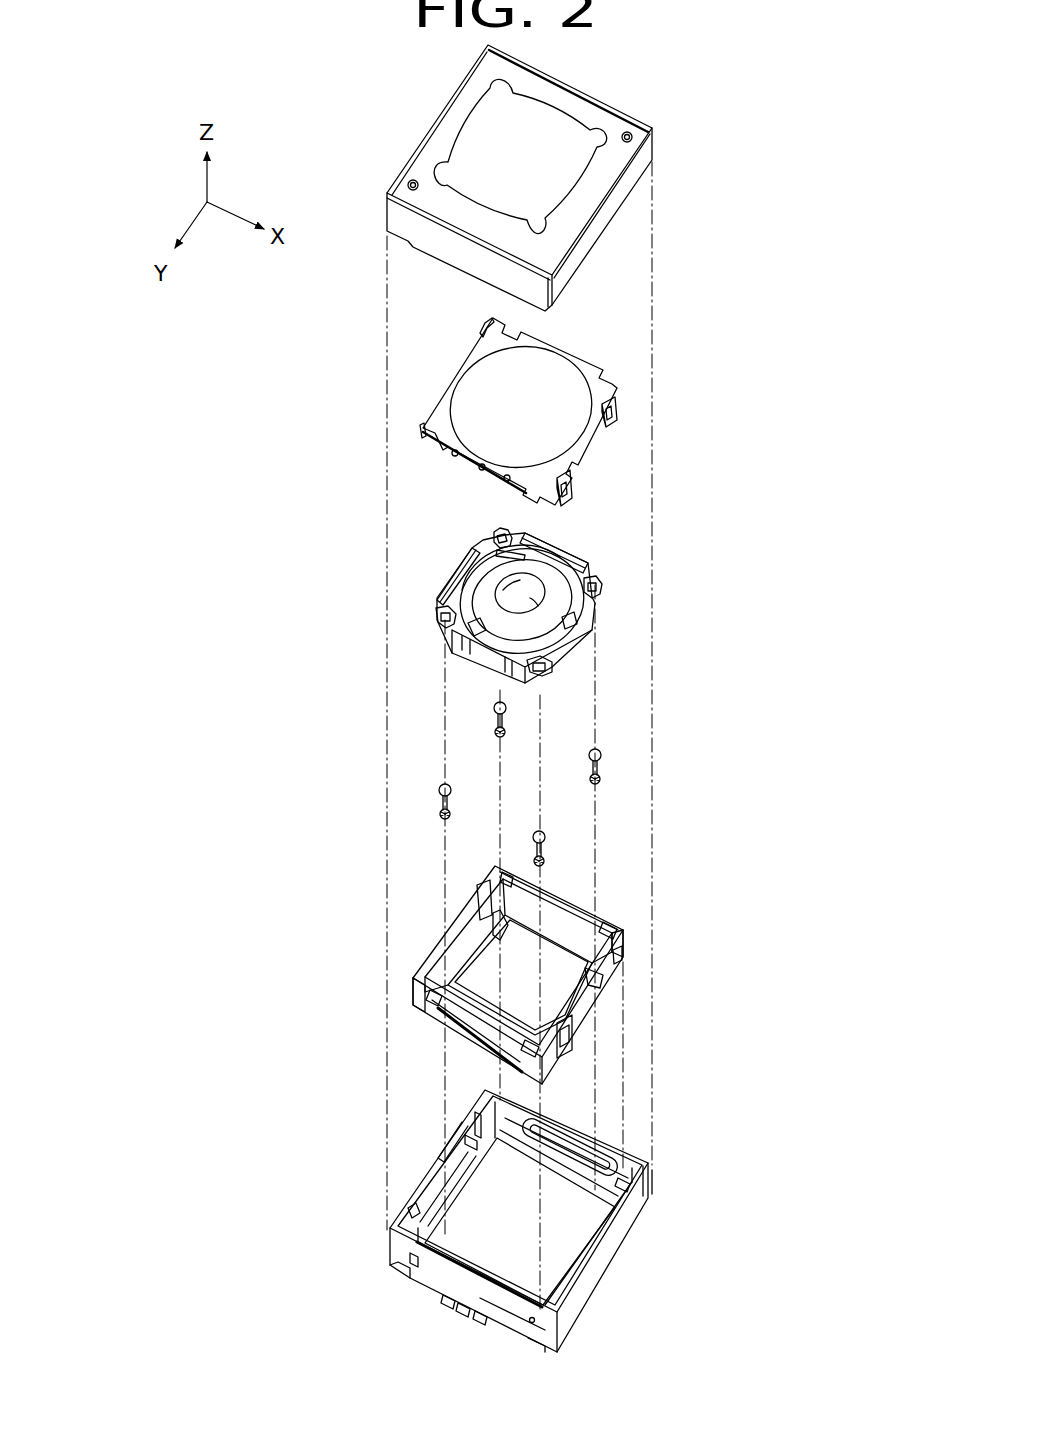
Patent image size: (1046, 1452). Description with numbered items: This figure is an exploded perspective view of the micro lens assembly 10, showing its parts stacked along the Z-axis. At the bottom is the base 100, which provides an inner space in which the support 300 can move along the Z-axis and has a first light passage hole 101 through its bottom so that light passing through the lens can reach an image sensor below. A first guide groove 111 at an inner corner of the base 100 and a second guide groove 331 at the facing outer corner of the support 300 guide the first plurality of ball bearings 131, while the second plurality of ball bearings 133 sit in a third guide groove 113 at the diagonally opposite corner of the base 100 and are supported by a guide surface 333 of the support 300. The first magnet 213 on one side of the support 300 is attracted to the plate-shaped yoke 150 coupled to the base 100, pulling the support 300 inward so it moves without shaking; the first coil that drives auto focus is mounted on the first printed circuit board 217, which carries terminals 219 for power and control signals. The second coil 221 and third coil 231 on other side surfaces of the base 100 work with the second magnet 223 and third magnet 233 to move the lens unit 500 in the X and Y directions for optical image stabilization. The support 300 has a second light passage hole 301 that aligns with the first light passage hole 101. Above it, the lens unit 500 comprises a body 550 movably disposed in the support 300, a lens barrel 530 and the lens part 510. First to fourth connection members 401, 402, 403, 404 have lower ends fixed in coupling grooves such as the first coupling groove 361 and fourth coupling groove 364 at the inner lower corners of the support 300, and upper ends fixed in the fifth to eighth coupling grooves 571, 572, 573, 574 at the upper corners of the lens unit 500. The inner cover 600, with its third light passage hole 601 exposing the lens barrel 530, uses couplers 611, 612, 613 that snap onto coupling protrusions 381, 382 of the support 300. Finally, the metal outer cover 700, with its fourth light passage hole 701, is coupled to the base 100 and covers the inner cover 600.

The micro lens assembly 10 is at (343, 110).
The outer cover 700 is at (622, 118).
The fourth light passage hole 701 is at (575, 172).
The inner cover 600 is at (610, 342).
The third light passage hole 601 is at (565, 372).
The coupler 611 is at (617, 410).
The coupler 612 is at (574, 488).
The coupler 613 is at (481, 330).
The lens unit 500 is at (531, 581).
The lens part 510 is at (490, 592).
The lens barrel 530 is at (450, 598).
The body 550 is at (580, 624).
The fifth coupling groove 571 is at (600, 586).
The sixth coupling groove 572 is at (552, 664).
The seventh coupling groove 573 is at (440, 622).
The eighth coupling groove 574 is at (497, 533).
The second magnet 223 is at (458, 570).
The third magnet 233 is at (552, 550).
The first connection member 401 is at (600, 768).
The second connection member 402 is at (544, 852).
The third connection member 403 is at (450, 806).
The fourth connection member 404 is at (504, 720).
The support 300 is at (626, 910).
The second light passage hole 301 is at (488, 974).
The second guide groove 331 is at (415, 995).
The guide surface 333 is at (622, 945).
The first coupling groove 361 is at (592, 988).
The fourth coupling groove 364 is at (482, 938).
The coupling protrusion 381 is at (623, 960).
The coupling protrusion 382 is at (590, 1040).
The first magnet 213 is at (450, 1033).
The base 100 is at (660, 1187).
The first light passage hole 101 is at (578, 1218).
The first guide groove 111 is at (415, 1212).
The third guide groove 113 is at (637, 1155).
The first plurality of ball bearings 131 is at (414, 1253).
The second plurality of ball bearings 133 is at (645, 1182).
The plate-shaped yoke 150 is at (498, 1298).
The first printed circuit board 217 is at (418, 1280).
The terminals 219 is at (458, 1302).
The second coil 221 is at (438, 1156).
The third coil 231 is at (570, 1145).